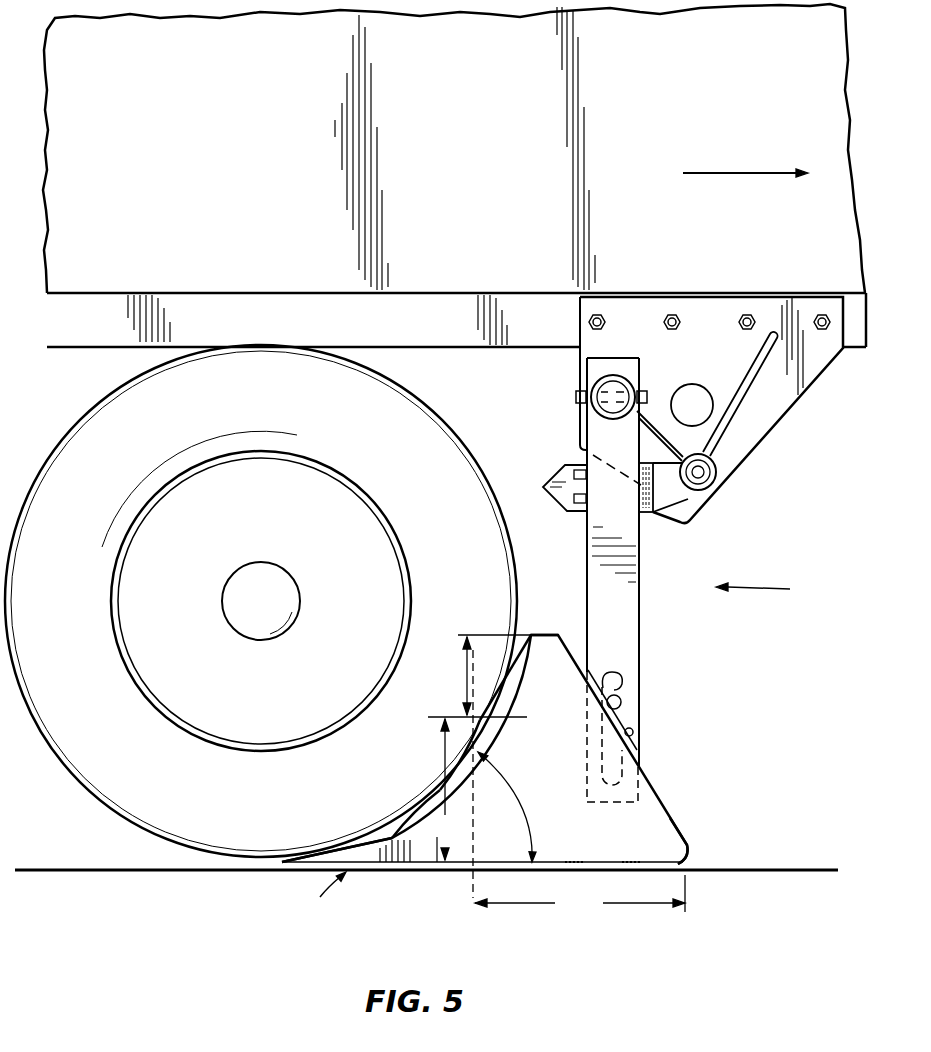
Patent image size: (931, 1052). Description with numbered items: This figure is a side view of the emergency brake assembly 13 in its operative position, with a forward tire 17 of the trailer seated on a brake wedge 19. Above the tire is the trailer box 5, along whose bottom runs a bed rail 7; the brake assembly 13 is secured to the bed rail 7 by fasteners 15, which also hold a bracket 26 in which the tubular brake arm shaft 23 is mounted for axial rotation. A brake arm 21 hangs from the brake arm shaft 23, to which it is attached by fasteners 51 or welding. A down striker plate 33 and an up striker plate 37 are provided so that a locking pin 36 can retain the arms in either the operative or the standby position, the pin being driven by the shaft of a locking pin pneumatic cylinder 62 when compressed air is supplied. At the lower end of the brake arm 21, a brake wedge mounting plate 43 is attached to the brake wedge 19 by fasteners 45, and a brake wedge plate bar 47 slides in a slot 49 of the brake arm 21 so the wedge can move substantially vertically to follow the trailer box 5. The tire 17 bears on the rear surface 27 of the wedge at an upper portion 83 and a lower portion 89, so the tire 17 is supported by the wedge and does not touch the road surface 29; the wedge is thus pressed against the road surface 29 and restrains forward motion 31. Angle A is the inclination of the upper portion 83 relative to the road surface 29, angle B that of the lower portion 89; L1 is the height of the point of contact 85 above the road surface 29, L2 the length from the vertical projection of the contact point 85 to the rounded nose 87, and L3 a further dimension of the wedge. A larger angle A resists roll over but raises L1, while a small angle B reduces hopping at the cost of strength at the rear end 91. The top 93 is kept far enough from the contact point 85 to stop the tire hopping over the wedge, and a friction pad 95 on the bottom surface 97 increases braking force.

The trailer box 5 is at (442, 165).
The bed rail 7 is at (280, 294).
The emergency brake assembly 13 is at (768, 590).
The fasteners 15 is at (665, 312).
The forward tire 17 is at (412, 425).
The brake wedge 19 is at (572, 797).
The brake arm 21 is at (643, 632).
The brake arm shaft 23 is at (597, 385).
The bracket 26 is at (818, 383).
The rear surface 27 is at (492, 730).
The road surface 29 is at (785, 868).
The forward motion 31 is at (760, 173).
The down striker plate 33 is at (688, 524).
The locking pin 36 is at (716, 470).
The up striker plate 37 is at (545, 485).
The brake wedge mounting plate 43 is at (642, 752).
The fasteners 45 is at (633, 731).
The brake wedge plate bar 47 is at (622, 706).
The slot 49 is at (615, 680).
The fasteners 51 is at (575, 398).
The locking pin pneumatic cylinder 62 is at (703, 410).
The upper portion 83 is at (523, 652).
The point of contact 85 is at (492, 722).
The nose 87 is at (690, 846).
The lower portion 89 is at (366, 838).
The rear end 91 is at (388, 805).
The top 93 is at (538, 630).
The friction pad 95 is at (574, 860).
The bottom surface 97 is at (632, 860).
The vertical distance L1 is at (444, 789).
The length L2 is at (579, 782).
The height dimension L3 is at (479, 676).
The angle A is at (507, 807).
The angle B is at (338, 841).